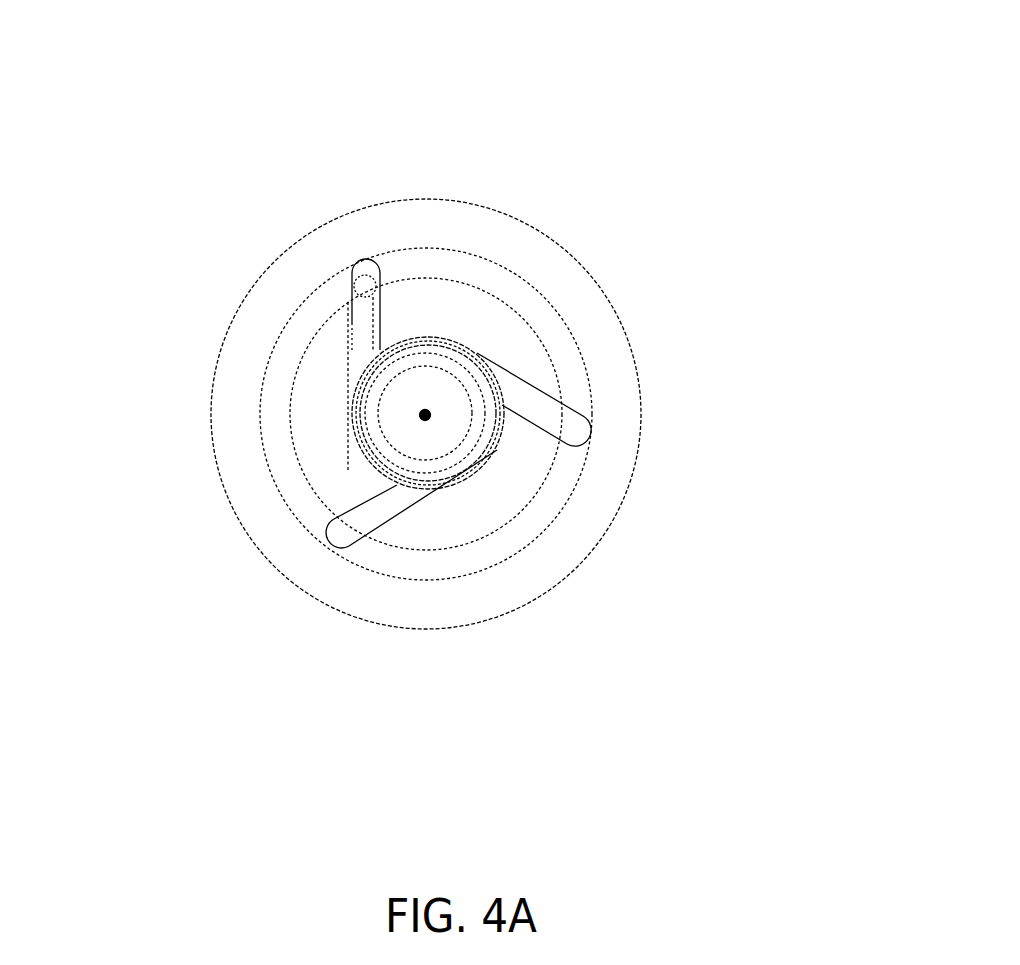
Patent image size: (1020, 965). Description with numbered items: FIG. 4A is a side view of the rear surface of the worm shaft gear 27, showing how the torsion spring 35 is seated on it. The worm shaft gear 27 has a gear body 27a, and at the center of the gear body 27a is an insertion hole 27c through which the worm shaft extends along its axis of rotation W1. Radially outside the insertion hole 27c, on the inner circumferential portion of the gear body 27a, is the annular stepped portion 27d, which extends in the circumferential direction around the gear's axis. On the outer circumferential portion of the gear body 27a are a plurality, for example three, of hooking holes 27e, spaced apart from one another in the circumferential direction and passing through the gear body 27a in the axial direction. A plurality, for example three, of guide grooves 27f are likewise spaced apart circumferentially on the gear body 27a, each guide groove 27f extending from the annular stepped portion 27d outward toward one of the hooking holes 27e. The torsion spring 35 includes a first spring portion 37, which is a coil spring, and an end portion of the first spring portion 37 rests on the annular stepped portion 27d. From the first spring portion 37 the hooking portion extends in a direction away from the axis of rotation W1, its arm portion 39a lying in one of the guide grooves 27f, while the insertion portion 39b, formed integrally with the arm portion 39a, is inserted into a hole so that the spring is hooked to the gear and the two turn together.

The worm shaft gear 27 is at (600, 90).
The gear body 27a is at (595, 272).
The insertion hole 27c is at (375, 436).
The annular stepped portion 27d is at (487, 450).
The hooking hole 27e is at (366, 270).
The guide groove 27f is at (380, 300).
The torsion spring 35 is at (480, 342).
The first spring portion 37 is at (442, 342).
The arm portion 39a is at (347, 312).
The insertion portion 39b is at (356, 286).
The axis of rotation W1 is at (428, 398).